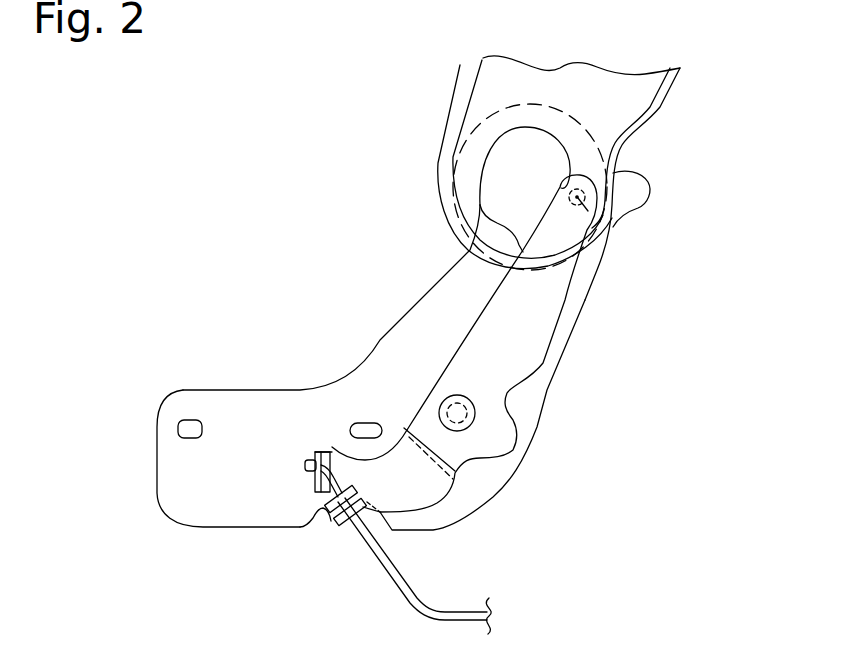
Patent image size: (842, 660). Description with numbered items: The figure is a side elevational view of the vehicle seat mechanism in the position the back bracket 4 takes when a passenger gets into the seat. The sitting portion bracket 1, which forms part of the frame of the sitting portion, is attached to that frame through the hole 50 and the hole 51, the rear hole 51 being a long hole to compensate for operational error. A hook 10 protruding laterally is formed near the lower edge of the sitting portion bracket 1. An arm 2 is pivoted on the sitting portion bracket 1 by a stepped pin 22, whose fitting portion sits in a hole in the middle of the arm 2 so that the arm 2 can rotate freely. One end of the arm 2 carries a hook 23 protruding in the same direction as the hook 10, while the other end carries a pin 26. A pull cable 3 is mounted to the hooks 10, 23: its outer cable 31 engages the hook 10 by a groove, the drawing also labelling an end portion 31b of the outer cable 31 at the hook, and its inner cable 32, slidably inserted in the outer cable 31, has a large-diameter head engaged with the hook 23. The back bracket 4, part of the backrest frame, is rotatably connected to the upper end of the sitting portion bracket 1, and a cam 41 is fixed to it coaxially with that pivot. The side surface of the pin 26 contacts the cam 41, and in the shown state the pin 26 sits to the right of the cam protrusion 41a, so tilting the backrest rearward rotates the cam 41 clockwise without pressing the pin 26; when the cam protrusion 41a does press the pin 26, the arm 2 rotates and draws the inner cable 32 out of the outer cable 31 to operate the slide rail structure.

The sitting portion bracket 1 is at (260, 407).
The arm 2 is at (553, 290).
The pull cable 3 is at (473, 572).
The back bracket 4 is at (660, 100).
The hook 10 is at (323, 523).
The stepped pin 22 is at (477, 413).
The hook 23 is at (313, 483).
The pin 26 is at (607, 230).
The outer cable 31 is at (398, 598).
The cable end fitting 31b is at (307, 463).
The inner cable 32 is at (329, 451).
The cam 41 is at (547, 153).
The cam protrusion 41a is at (490, 262).
The hole 50 is at (186, 420).
The hole 51 is at (370, 423).